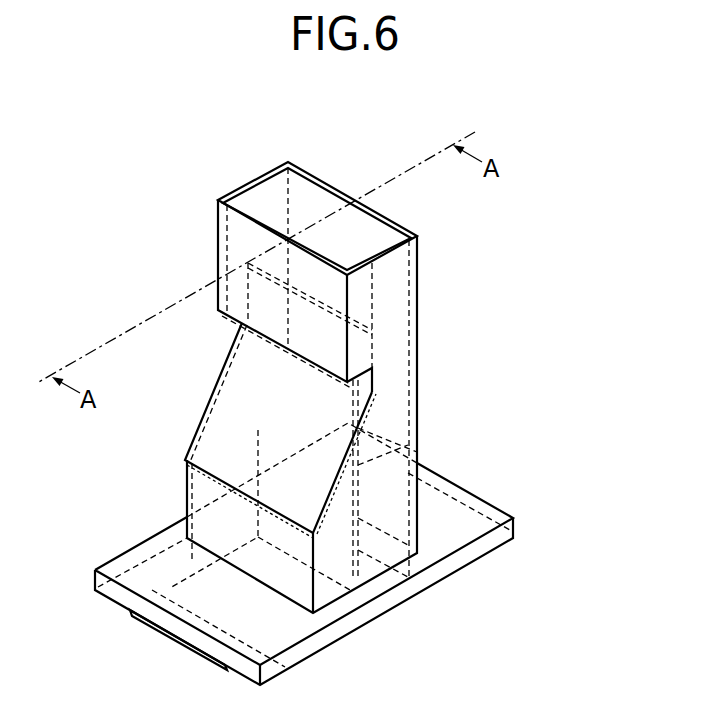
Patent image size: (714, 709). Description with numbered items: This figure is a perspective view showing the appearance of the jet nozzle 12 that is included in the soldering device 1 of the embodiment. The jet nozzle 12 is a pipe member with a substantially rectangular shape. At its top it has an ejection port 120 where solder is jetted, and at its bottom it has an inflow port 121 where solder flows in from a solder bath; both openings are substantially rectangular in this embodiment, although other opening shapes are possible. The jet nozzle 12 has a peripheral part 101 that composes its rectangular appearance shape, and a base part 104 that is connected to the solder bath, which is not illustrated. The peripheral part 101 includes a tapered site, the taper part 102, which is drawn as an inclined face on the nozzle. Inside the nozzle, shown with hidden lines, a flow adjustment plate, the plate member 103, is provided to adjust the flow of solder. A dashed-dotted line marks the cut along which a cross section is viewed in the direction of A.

The soldering device 1 is at (548, 158).
The jet nozzle 12 is at (445, 278).
The peripheral part 101 is at (418, 332).
The taper part 102 is at (340, 485).
The plate member 103 is at (417, 440).
The base part 104 is at (450, 515).
The ejection port 120 is at (343, 165).
The inflow port 121 is at (393, 617).